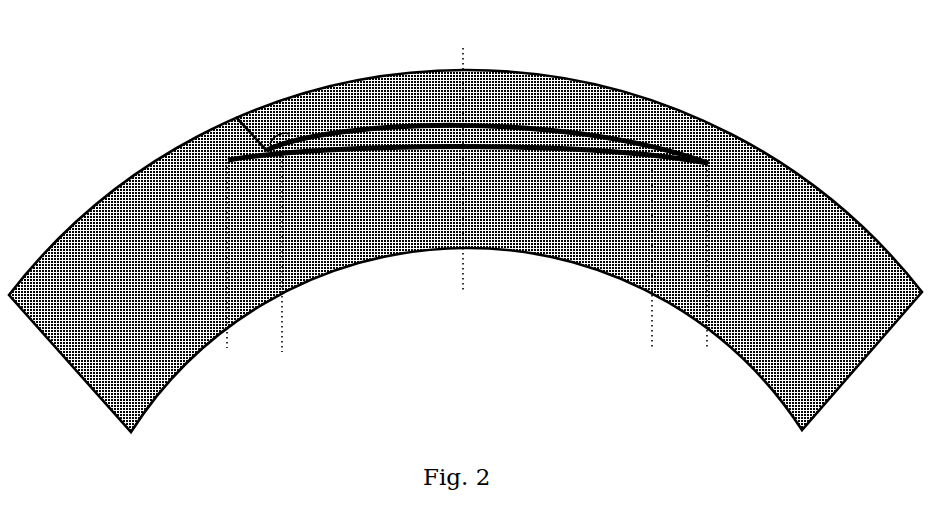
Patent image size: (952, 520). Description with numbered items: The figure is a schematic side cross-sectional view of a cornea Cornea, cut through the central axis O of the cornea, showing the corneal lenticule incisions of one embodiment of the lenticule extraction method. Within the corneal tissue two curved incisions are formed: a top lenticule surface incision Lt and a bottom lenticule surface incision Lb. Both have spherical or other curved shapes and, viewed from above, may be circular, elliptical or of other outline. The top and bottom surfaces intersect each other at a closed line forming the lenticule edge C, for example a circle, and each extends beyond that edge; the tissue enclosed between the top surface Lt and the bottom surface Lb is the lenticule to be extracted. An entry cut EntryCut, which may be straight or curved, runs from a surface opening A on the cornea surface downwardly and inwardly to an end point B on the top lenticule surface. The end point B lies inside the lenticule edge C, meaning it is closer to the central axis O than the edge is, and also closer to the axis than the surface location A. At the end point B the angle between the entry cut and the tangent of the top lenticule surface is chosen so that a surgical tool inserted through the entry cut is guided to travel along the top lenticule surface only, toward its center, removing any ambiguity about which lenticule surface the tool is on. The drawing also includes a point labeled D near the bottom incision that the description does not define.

The cornea Cornea is at (465, 251).
The central axis O is at (463, 150).
The top lenticule surface incision Lt is at (508, 115).
The bottom lenticule surface incision Lb is at (462, 152).
The entry cut EntryCut is at (260, 110).
The surface opening A is at (234, 116).
The end point of the entry cut B is at (265, 145).
The lenticule edge C is at (247, 165).
The point on bottom cut below junction D is at (287, 166).